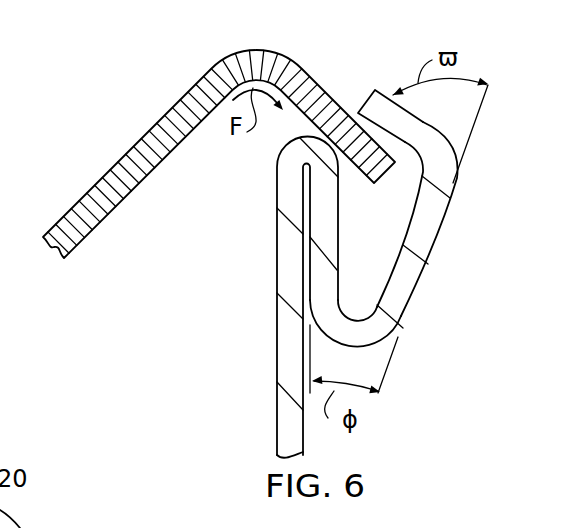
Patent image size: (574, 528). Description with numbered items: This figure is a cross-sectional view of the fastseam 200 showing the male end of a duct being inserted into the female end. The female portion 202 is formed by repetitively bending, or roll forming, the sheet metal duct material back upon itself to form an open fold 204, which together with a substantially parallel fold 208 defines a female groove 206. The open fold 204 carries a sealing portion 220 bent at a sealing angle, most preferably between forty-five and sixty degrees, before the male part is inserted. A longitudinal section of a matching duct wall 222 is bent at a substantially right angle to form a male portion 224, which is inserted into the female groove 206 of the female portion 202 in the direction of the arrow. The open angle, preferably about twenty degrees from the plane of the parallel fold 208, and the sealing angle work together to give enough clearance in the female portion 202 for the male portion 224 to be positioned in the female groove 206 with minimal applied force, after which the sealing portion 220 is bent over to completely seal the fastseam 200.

The fastseam 200 is at (188, 301).
The female portion 202 is at (396, 197).
The open fold 204 is at (418, 252).
The female groove 206 is at (357, 302).
The parallel fold 208 is at (279, 195).
The sealing portion 220 is at (375, 110).
The matching duct wall 222 is at (95, 202).
The male portion 224 is at (327, 100).